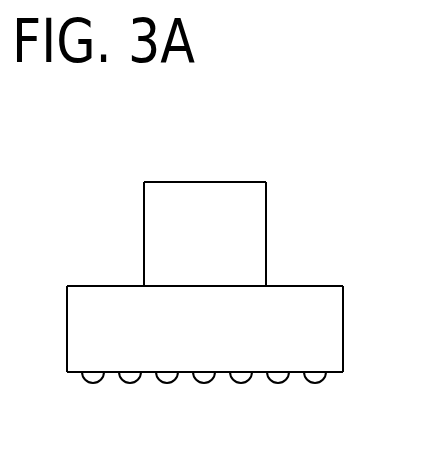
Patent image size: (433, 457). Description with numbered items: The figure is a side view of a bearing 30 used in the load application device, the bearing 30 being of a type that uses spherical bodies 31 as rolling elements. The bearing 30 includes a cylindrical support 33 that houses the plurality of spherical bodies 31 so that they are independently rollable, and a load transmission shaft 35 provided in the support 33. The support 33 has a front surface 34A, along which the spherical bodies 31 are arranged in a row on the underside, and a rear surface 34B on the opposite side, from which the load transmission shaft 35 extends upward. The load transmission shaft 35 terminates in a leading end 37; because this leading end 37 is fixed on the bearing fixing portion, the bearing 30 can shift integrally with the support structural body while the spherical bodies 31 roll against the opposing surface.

The bearing 30 is at (235, 277).
The spherical bodies 31 is at (93, 383).
The support 33 is at (235, 331).
The front surface 34A is at (336, 373).
The rear surface 34B is at (329, 286).
The load transmission shaft 35 is at (266, 228).
The leading end 37 is at (248, 181).